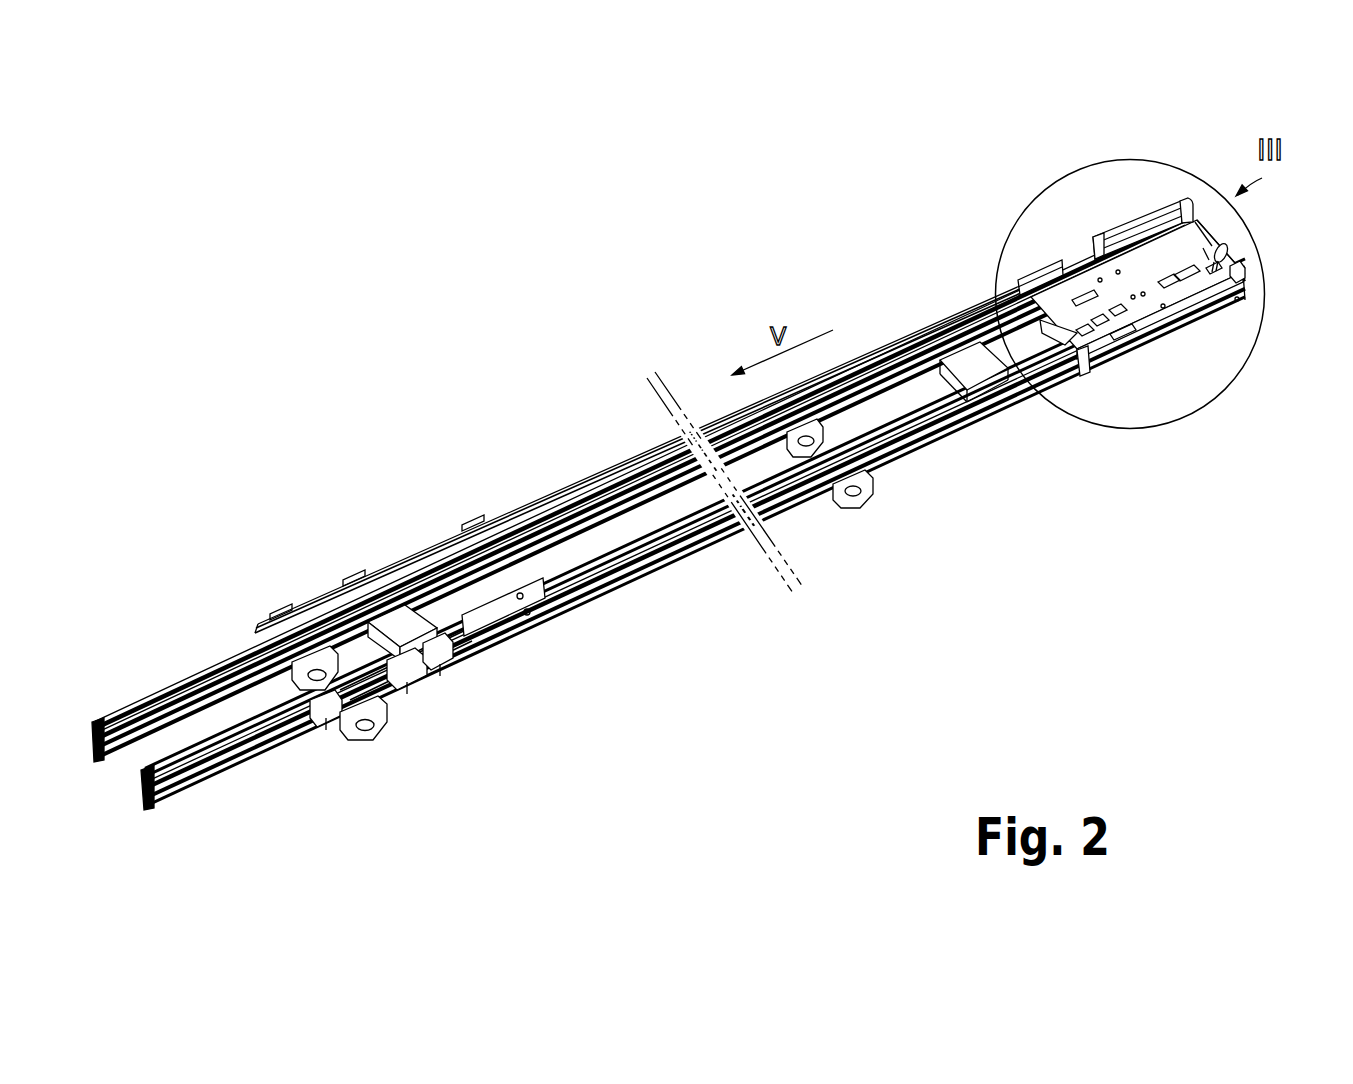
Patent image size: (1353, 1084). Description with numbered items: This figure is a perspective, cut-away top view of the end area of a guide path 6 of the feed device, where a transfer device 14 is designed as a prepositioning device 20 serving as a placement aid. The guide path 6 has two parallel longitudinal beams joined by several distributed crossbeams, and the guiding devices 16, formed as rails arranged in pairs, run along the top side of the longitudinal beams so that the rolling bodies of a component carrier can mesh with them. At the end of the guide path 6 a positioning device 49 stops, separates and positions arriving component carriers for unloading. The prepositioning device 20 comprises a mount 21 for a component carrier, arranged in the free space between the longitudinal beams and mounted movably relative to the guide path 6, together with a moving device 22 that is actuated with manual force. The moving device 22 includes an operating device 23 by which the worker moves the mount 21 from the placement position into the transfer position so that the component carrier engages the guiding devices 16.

The guide path 6 is at (665, 546).
The guiding devices 16 is at (94, 719).
The positioning device 49 is at (307, 607).
The transfer device 14 is at (1136, 306).
The prepositioning device 20 is at (1136, 306).
The mount 21 is at (1058, 312).
The moving device 22 is at (1057, 342).
The operating device 23 is at (1249, 246).